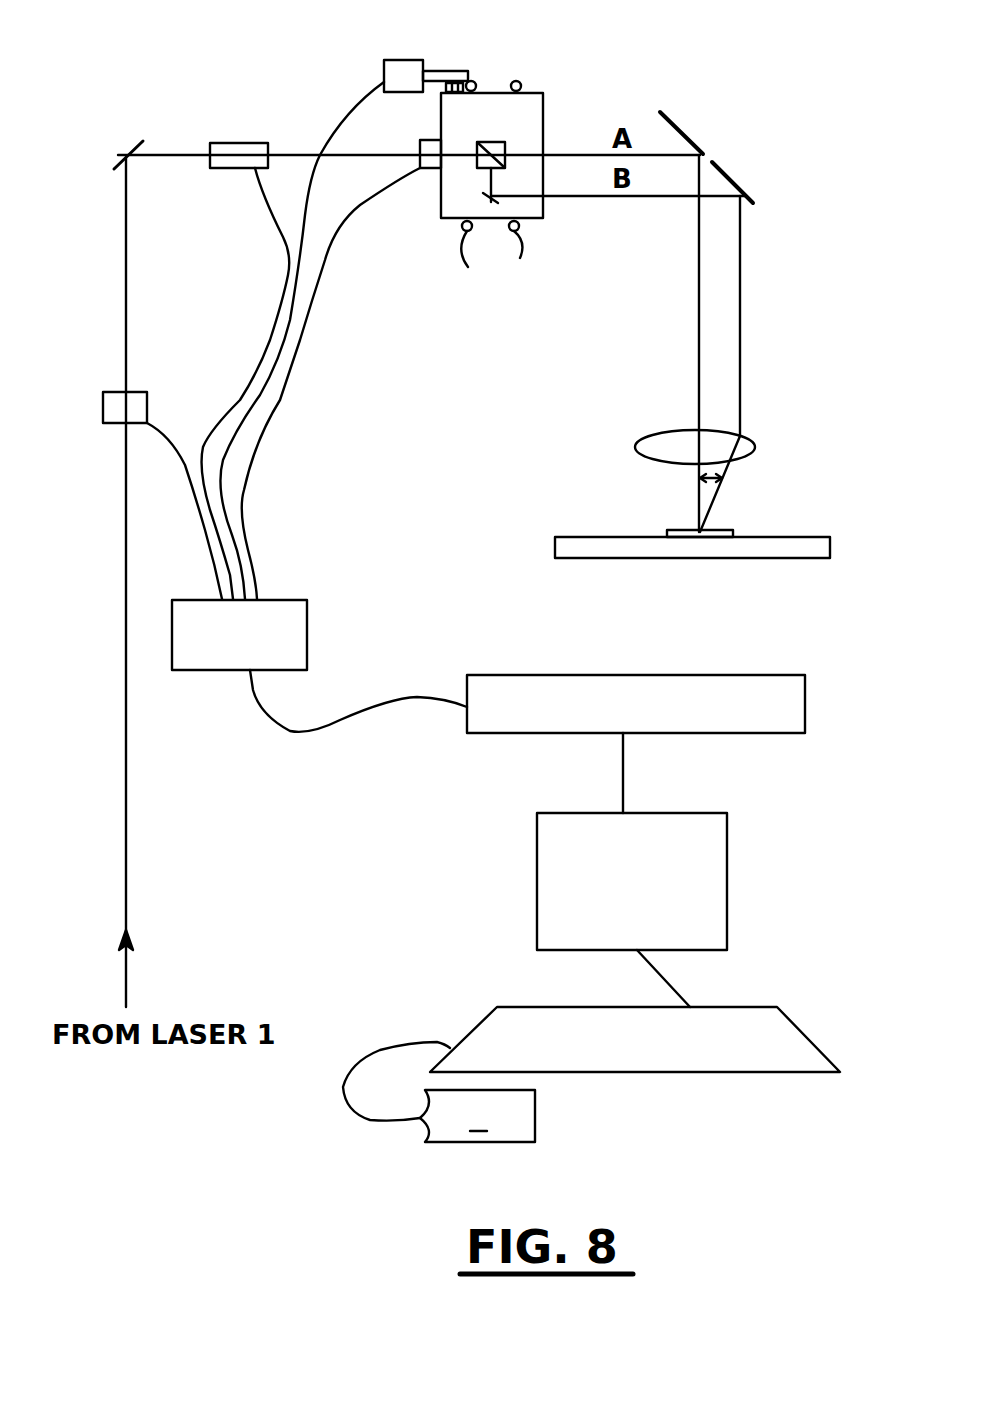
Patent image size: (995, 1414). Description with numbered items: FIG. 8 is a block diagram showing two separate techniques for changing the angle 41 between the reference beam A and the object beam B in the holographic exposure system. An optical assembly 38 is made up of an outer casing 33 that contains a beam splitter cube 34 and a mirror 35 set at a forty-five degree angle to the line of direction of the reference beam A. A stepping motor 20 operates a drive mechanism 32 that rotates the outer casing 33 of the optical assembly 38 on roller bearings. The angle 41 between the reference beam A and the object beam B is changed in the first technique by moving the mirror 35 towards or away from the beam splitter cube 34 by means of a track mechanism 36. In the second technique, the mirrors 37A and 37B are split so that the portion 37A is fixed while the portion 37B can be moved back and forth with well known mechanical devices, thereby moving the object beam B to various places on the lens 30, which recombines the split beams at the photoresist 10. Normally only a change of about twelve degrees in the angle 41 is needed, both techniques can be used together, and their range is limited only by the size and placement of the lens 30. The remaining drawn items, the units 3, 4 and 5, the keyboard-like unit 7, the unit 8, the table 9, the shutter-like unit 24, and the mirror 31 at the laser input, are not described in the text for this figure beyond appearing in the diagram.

The control unit 3 is at (298, 638).
The computer interface 4 is at (795, 713).
The computer 5 is at (712, 853).
The keyboard 7 is at (800, 1047).
The mouse 8 is at (439, 1092).
The work table 9 is at (818, 547).
The photoresist 10 is at (732, 528).
The stepping motor 20 is at (395, 60).
The shutter 24 is at (138, 392).
The lens 30 is at (740, 443).
The mirror 31 is at (123, 158).
The drive mechanism 32 is at (500, 25).
The outer casing 33 is at (422, 142).
The beam splitter cube 34 is at (504, 157).
The mirror 35 is at (486, 197).
The track mechanism 36 is at (491, 183).
The fixed mirror portion 37A is at (712, 124).
The movable mirror portion 37B is at (758, 178).
The optical assembly 38 is at (543, 120).
The angle 41 is at (724, 478).